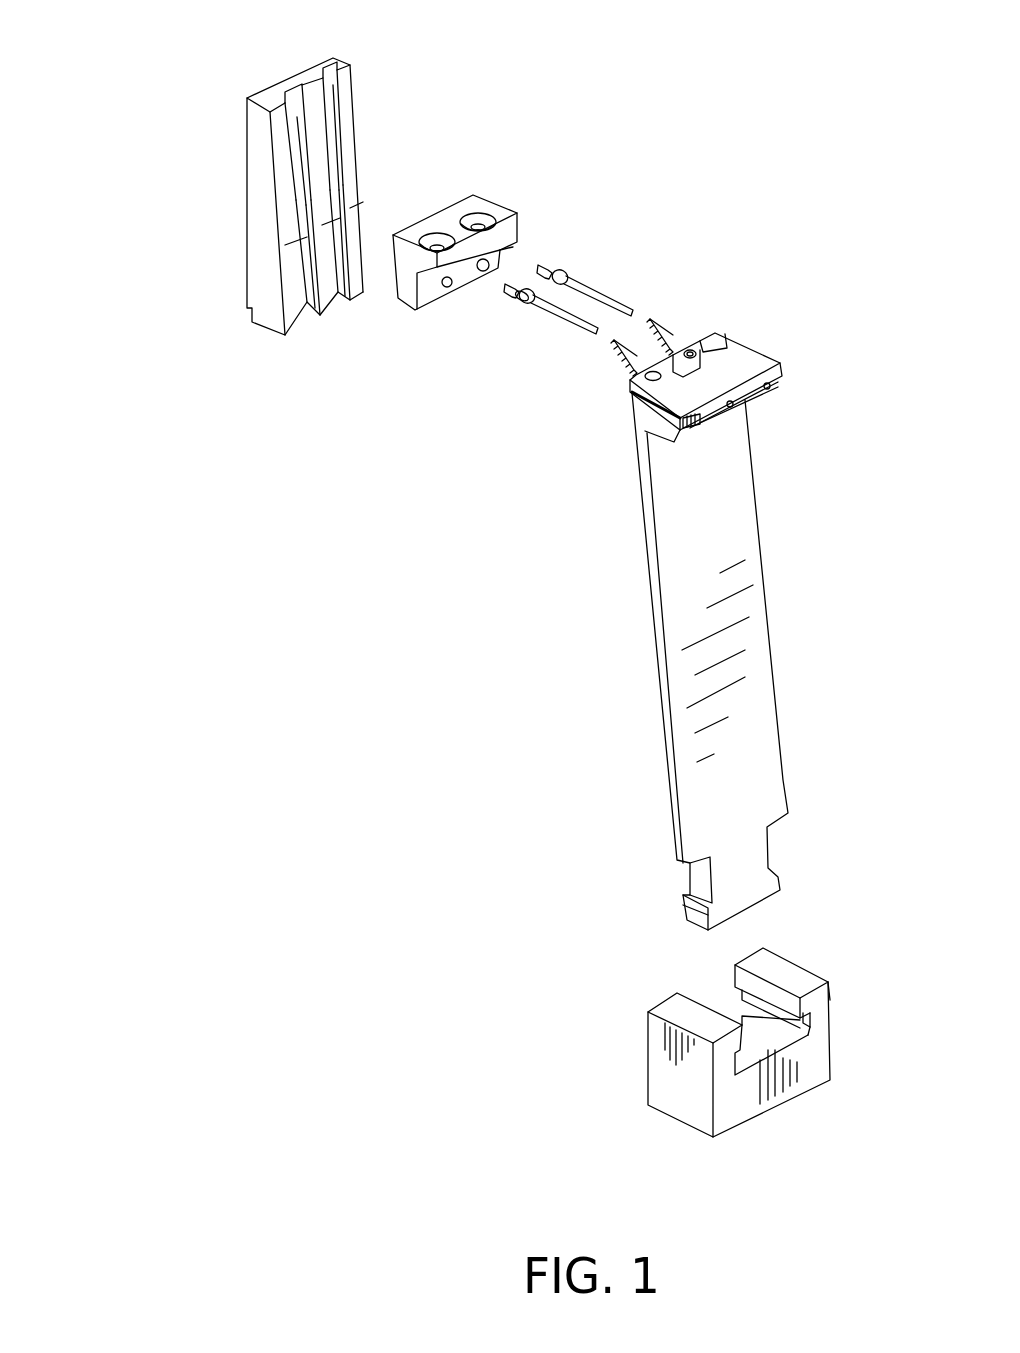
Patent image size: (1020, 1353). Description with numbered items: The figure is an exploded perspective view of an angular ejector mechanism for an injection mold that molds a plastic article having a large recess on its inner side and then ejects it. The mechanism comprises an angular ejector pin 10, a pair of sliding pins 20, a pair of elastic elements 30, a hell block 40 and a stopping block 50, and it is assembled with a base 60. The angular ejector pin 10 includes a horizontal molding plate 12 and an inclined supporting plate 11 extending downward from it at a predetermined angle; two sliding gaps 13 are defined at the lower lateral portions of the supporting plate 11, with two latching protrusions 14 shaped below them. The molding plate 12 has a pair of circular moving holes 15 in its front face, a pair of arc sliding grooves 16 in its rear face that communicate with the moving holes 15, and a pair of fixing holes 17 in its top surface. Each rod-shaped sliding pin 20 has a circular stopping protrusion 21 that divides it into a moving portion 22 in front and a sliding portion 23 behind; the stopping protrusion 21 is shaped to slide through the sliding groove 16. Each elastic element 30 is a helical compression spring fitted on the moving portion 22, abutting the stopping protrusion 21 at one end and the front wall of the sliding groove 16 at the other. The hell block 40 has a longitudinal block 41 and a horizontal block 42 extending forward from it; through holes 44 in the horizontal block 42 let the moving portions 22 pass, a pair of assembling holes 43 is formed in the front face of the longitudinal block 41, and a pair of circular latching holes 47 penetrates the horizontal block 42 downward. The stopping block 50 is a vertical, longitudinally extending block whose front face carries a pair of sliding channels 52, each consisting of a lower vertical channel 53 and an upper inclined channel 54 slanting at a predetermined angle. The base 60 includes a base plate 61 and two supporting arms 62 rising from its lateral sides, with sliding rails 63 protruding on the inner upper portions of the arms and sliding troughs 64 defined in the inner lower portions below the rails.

The angular ejector pin 10 is at (630, 618).
The supporting plate 11 is at (740, 575).
The molding plate 12 is at (757, 358).
The sliding gaps 13 is at (690, 882).
The latching protrusions 14 is at (690, 907).
The circular moving hole 15 is at (782, 389).
The arc sliding groove 16 is at (641, 369).
The fixing hole 17 is at (692, 350).
The sliding pin 20 is at (647, 217).
The stopping protrusion 21 is at (562, 266).
The moving portion 22 is at (573, 330).
The sliding portion 23 is at (507, 289).
The elastic element 30 is at (670, 308).
The hell block 40 is at (510, 178).
The longitudinal block 41 is at (403, 282).
The horizontal block 42 is at (432, 223).
The assembling holes 43 is at (448, 288).
The through holes 44 is at (513, 247).
The circular latching hole 47 is at (476, 222).
The stopping block 50 is at (215, 107).
The sliding channels 52 is at (122, 200).
The vertical channel 53 is at (307, 275).
The inclined channel 54 is at (296, 118).
The base 60 is at (822, 1107).
The base plate 61 is at (752, 1047).
The supporting arms 62 is at (680, 1005).
The sliding rails 63 is at (763, 987).
The sliding troughs 64 is at (803, 1023).